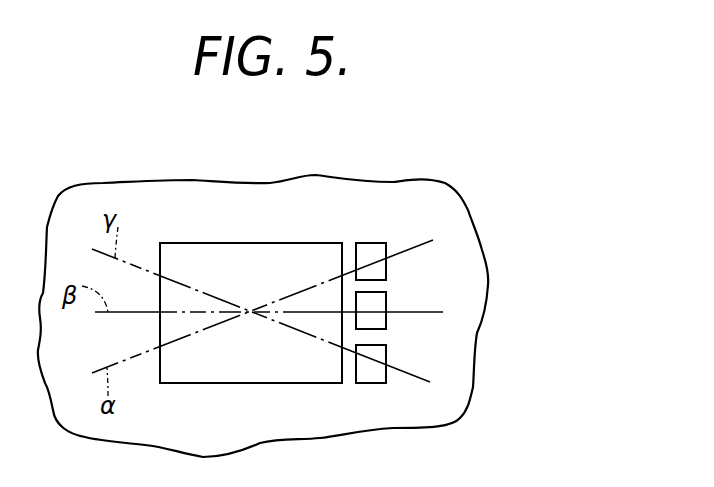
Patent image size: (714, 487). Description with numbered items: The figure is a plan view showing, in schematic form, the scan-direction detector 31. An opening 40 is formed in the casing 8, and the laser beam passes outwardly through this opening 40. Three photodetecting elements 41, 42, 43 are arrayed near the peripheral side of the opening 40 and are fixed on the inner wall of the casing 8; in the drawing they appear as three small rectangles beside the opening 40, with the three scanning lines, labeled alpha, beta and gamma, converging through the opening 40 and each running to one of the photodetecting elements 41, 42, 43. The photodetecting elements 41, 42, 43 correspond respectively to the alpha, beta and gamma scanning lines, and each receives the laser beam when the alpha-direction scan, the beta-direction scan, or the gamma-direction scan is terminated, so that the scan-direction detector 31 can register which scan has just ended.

The casing 8 is at (437, 203).
The opening 40 is at (320, 257).
The scan-direction detector 31 is at (481, 312).
The photodetecting element 41 is at (386, 268).
The photodetecting element 42 is at (387, 322).
The photodetecting element 43 is at (387, 350).